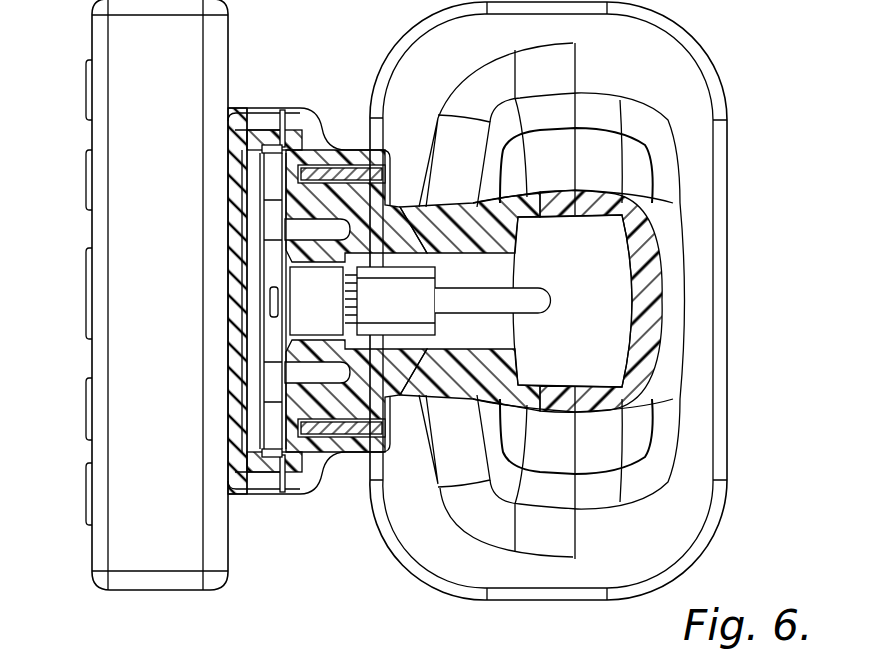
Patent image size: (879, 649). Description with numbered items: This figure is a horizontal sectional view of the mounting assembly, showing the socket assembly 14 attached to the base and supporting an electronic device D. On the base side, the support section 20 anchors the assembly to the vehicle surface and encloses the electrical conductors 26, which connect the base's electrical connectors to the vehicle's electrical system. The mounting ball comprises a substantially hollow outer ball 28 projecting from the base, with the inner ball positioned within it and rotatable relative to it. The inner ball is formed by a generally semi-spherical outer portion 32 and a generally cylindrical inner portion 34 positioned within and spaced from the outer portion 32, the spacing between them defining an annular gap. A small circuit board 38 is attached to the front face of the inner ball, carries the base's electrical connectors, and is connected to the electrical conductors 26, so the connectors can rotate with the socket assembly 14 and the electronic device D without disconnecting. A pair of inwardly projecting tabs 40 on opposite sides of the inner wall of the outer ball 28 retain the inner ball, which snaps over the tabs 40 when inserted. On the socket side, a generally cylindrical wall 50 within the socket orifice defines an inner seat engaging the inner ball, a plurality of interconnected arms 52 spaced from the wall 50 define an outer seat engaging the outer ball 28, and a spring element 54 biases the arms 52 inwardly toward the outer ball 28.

The socket assembly 14 is at (216, 119).
The support section 20 is at (667, 410).
The electrical conductors 26 is at (515, 300).
The outer ball 28 is at (368, 205).
The outer portion 32 is at (340, 215).
The inner portion 34 is at (297, 247).
The circuit board 38 is at (288, 281).
The inwardly projecting tabs 40 is at (302, 214).
The cylindrical wall 50 is at (300, 238).
The interconnected arms 52 is at (385, 194).
The spring element 54 is at (352, 422).
The electronic device D is at (84, 364).